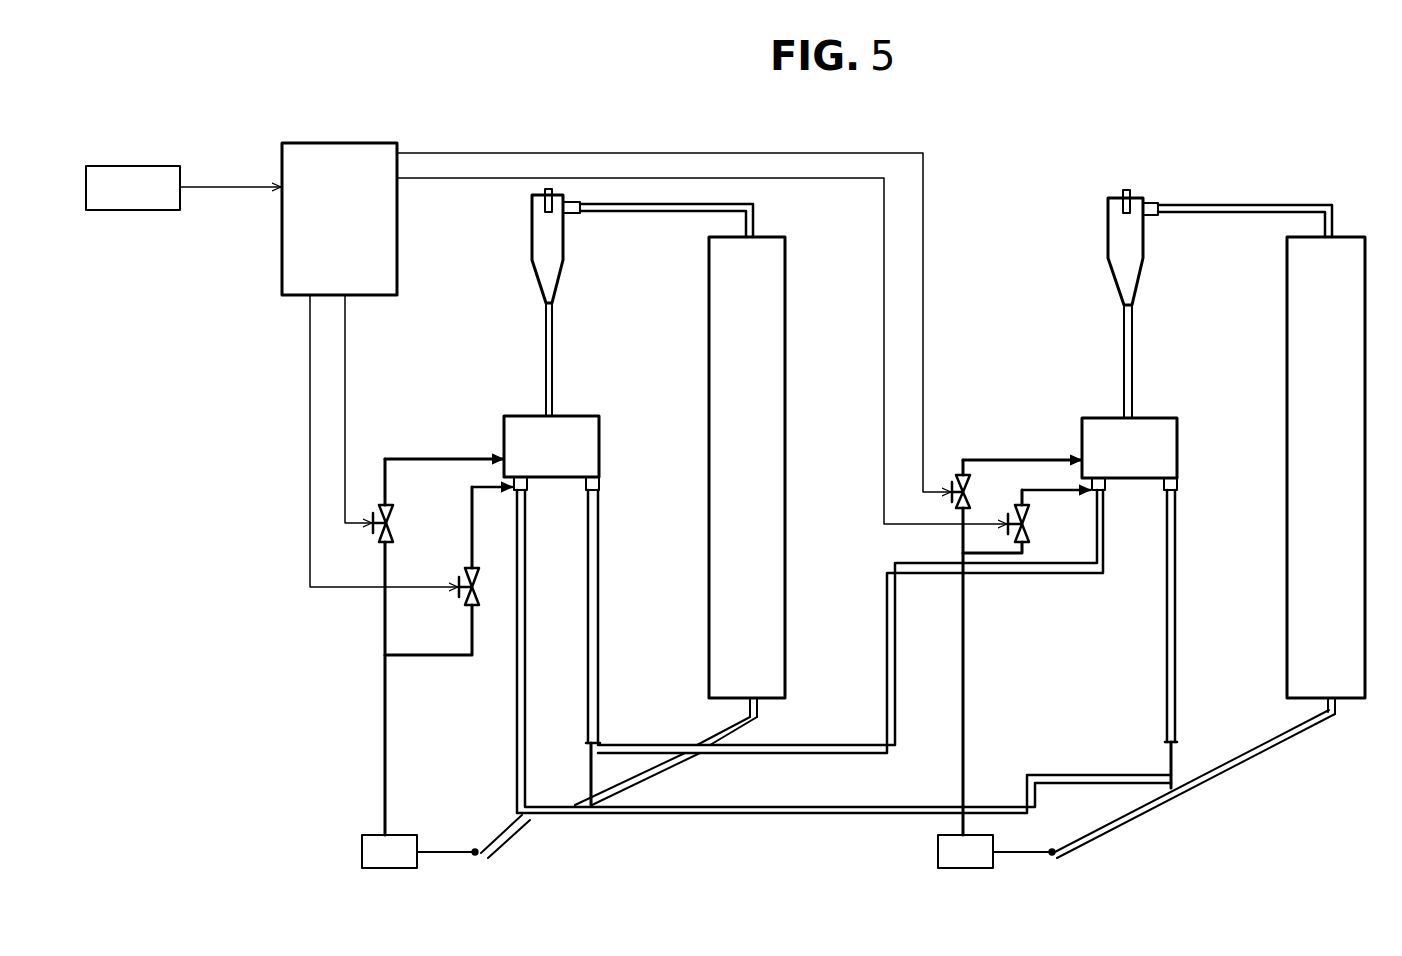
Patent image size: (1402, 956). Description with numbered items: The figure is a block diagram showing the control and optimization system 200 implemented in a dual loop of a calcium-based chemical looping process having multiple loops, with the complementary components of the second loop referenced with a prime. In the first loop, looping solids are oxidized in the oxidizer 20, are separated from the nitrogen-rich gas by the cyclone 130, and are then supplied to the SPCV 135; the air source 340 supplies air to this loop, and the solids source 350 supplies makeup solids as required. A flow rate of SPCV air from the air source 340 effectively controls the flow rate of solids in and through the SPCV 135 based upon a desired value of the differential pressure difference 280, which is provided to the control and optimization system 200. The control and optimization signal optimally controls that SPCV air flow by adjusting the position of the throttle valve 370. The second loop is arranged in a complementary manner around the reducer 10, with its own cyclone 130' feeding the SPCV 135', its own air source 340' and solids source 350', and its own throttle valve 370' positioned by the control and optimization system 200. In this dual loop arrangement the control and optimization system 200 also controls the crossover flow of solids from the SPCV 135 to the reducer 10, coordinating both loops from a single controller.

The differential pressure difference 280 is at (183, 188).
The control and optimization system 200 is at (644, 365).
The cyclone 130' is at (642, 302).
The reducer 10 is at (741, 491).
The SPCV 135' is at (492, 453).
The throttle valve 370' is at (426, 647).
The solids source 350' is at (839, 647).
The air source 340' is at (766, 679).
The cyclone 130 is at (1220, 304).
The oxidizer 20 is at (1326, 475).
The SPCV 135 is at (1070, 454).
The throttle valve 370 is at (990, 647).
The solids source 350 is at (1189, 674).
The air source 340 is at (996, 851).